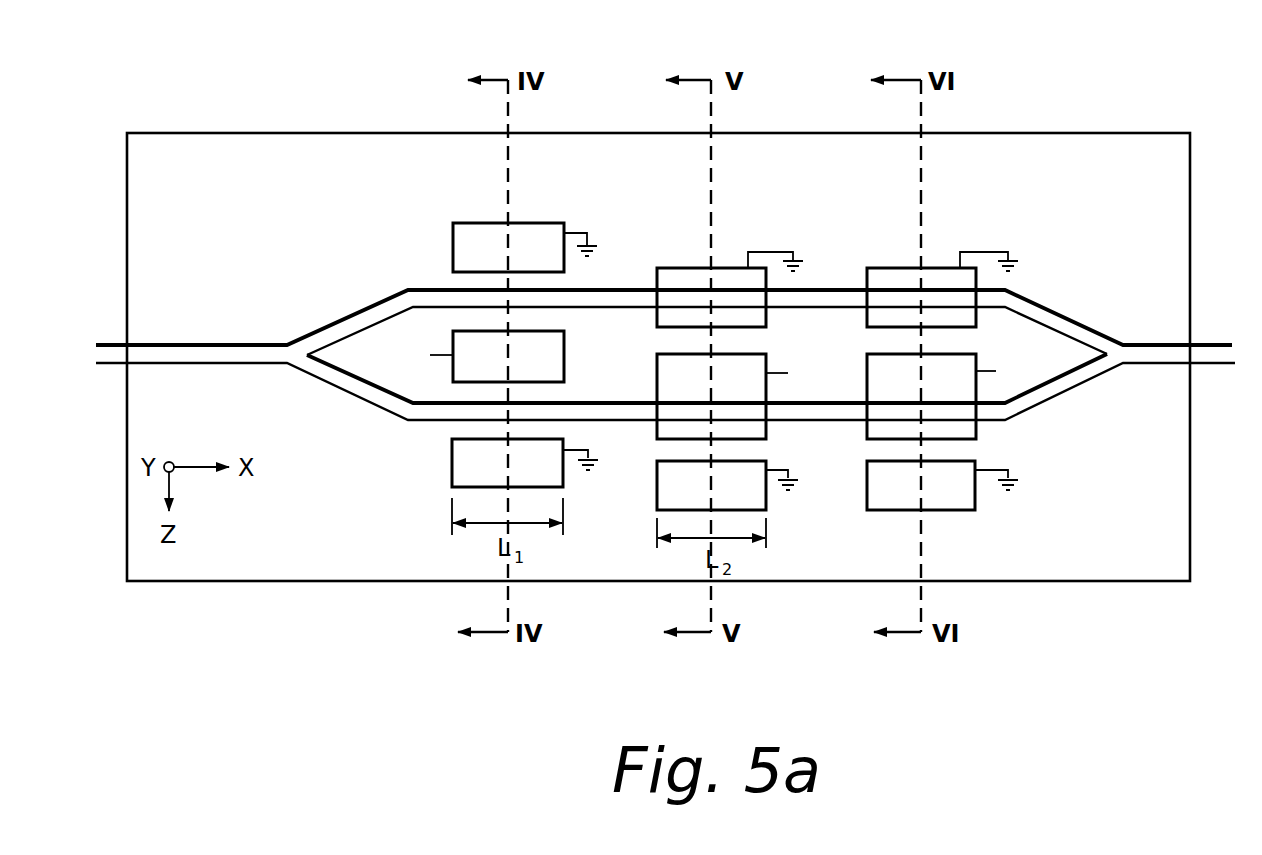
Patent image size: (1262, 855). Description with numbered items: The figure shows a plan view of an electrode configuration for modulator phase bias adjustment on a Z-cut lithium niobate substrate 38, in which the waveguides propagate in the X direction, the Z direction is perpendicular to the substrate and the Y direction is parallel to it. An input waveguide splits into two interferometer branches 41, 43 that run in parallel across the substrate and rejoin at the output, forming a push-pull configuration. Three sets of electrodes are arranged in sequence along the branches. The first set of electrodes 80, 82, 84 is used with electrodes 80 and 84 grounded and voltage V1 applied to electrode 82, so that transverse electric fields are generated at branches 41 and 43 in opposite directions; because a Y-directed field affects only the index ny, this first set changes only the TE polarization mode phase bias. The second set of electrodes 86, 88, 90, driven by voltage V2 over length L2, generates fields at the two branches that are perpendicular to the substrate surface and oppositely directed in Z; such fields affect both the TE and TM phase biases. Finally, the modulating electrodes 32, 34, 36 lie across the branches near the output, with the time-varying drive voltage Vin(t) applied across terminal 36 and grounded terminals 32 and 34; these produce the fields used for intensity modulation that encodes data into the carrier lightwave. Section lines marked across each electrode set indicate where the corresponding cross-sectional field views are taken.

The substrate 38 is at (1192, 201).
The branch 43 is at (341, 320).
The branch 41 is at (358, 395).
The electrode 80 is at (470, 223).
The electrode 82 is at (565, 357).
The electrode 84 is at (452, 461).
The electrode 86 is at (690, 268).
The electrode 88 is at (657, 386).
The electrode 90 is at (657, 478).
The grounded terminal 32 is at (905, 268).
The terminal 36 is at (867, 368).
The grounded terminal 34 is at (942, 510).